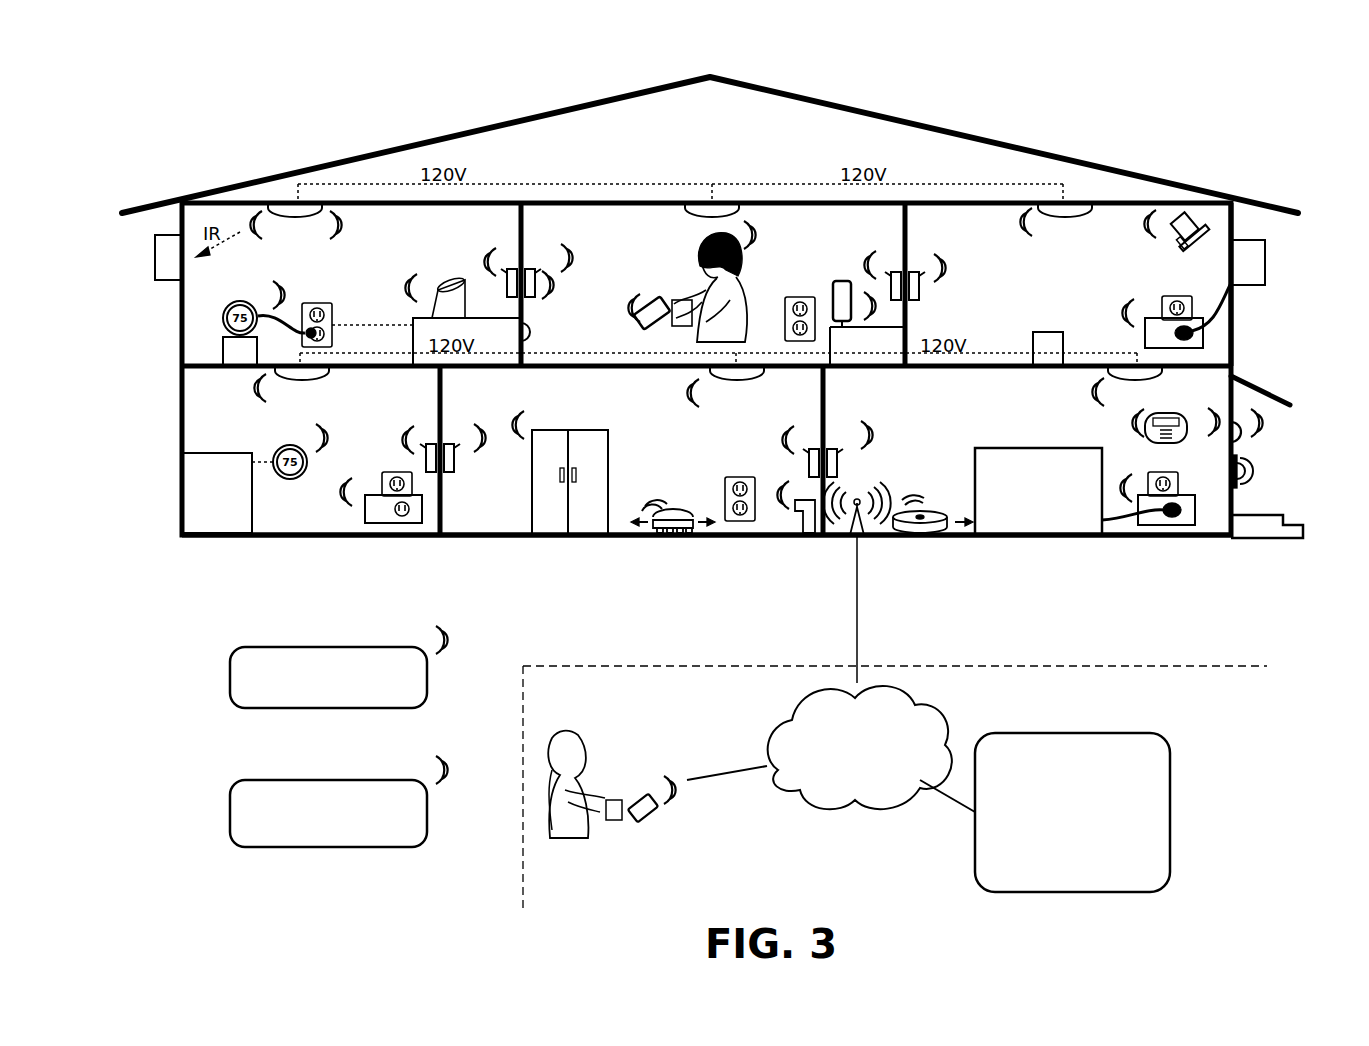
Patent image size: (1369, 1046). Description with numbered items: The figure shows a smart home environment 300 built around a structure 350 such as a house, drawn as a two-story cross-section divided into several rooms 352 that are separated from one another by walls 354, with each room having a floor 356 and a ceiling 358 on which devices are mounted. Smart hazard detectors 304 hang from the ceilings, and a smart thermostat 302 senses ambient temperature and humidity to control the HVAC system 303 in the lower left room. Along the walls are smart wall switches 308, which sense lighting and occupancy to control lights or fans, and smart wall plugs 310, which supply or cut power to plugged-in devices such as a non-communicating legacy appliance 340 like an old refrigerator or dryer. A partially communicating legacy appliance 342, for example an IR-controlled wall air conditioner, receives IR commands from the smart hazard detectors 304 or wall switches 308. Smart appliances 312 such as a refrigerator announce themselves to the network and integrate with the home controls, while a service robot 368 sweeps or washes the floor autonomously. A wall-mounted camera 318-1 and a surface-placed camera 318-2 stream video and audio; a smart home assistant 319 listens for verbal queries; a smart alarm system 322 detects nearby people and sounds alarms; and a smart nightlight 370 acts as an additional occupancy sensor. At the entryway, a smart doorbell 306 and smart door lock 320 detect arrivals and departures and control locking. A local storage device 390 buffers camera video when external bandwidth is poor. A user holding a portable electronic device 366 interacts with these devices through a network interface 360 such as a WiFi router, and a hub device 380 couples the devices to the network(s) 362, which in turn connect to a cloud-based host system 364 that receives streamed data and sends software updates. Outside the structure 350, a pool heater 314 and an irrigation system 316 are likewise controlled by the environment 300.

The smart home environment 300 is at (130, 122).
The smart thermostat 302 is at (290, 480).
The HVAC system 303 is at (210, 455).
The smart hazard detector 304 is at (294, 200).
The smart doorbell 306 is at (1246, 432).
The smart wall switch 308 is at (447, 475).
The smart wall plug 310 is at (382, 515).
The smart appliance 312 is at (550, 522).
The pool heater 314 is at (230, 678).
The irrigation system 316 is at (230, 808).
The camera 318-1 is at (1170, 238).
The camera 318-2 is at (834, 290).
The smart home assistant 319 is at (446, 283).
The smart door lock 320 is at (1252, 472).
The smart alarm system 322 is at (1168, 414).
The legacy appliance 340 is at (1250, 278).
The partially communicating legacy appliance 342 is at (160, 275).
The structure 350 is at (432, 142).
The room 352 is at (1138, 213).
The wall 354 is at (902, 233).
The floor 356 is at (520, 533).
The ceiling 358 is at (614, 370).
The network interface 360 is at (850, 538).
The network(s) 362 is at (948, 740).
The cloud-based host system 364 is at (1165, 885).
The portable electronic device 366 is at (652, 297).
The service robot 368 is at (673, 515).
The smart nightlight 370 is at (534, 336).
The hub device 380 is at (933, 510).
The local storage device 390 is at (1050, 332).